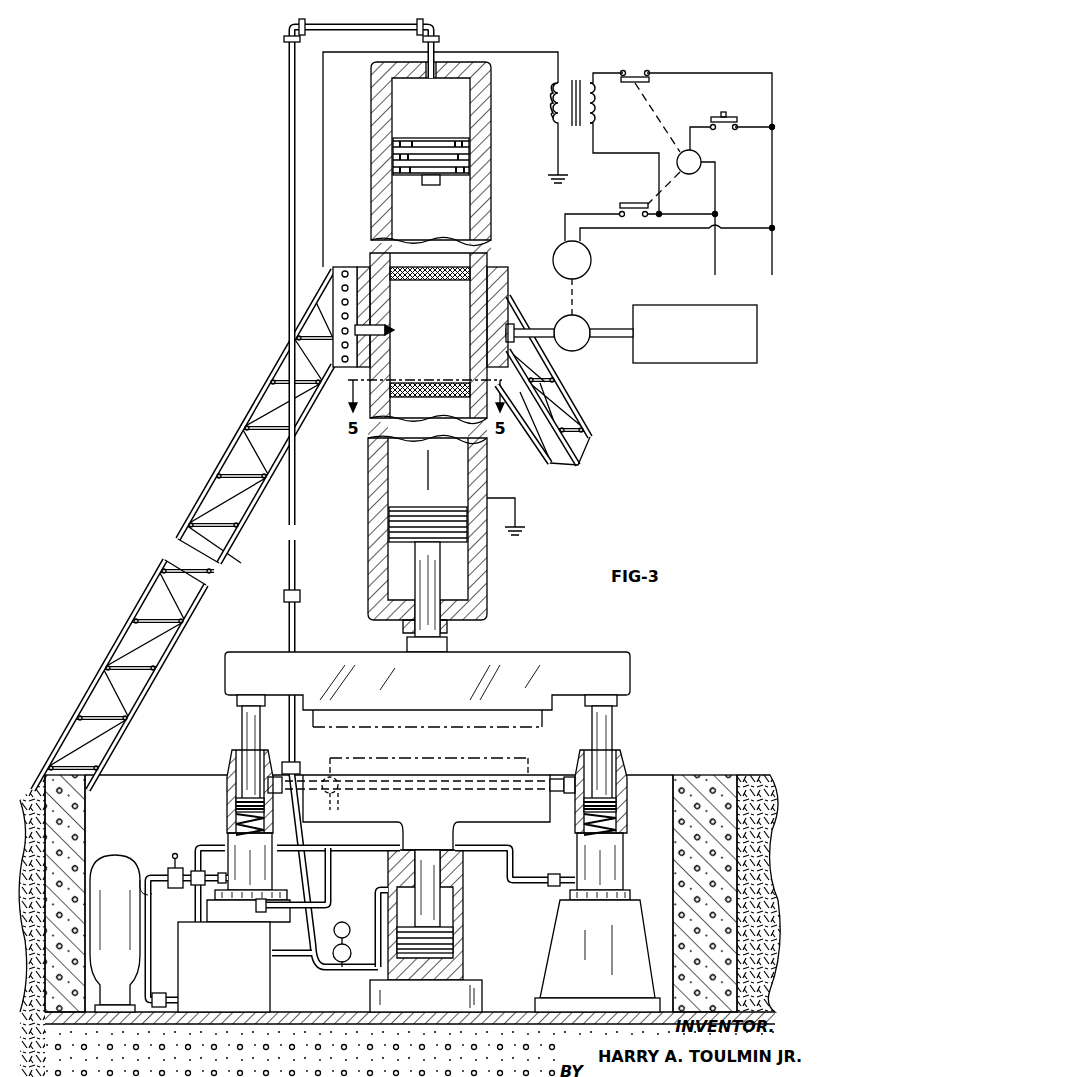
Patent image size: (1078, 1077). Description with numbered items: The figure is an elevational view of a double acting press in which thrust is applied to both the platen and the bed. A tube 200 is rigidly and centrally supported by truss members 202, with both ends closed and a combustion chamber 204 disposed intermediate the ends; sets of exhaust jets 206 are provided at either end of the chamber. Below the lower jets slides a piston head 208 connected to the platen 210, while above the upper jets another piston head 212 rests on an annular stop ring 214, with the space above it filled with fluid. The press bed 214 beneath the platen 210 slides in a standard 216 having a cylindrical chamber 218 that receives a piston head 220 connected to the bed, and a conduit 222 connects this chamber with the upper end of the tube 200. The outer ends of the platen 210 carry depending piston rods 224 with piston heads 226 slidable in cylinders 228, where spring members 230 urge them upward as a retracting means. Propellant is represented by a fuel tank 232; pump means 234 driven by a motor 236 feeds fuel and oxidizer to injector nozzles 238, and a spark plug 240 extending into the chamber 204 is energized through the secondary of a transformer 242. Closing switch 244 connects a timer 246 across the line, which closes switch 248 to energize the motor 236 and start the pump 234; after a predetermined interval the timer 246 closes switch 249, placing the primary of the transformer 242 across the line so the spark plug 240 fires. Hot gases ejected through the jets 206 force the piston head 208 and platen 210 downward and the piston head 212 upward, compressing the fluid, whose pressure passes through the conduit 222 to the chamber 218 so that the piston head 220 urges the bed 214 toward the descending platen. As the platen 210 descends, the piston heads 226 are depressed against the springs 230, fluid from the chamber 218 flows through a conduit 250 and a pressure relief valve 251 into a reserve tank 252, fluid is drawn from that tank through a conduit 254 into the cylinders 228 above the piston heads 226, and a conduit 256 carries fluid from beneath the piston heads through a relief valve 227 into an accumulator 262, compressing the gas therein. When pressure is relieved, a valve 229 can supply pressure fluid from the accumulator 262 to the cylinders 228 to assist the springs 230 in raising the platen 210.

The tube 200 is at (377, 478).
The truss members 202 is at (222, 453).
The combustion chamber 204 is at (414, 313).
The exhaust jets 206 is at (440, 270).
The piston head 208 is at (394, 532).
The platen 210 is at (414, 694).
The piston head 212 is at (408, 142).
The press bed 214 is at (465, 183).
The standard 216 is at (464, 966).
The cylindrical chamber 218 is at (466, 914).
The piston head 220 is at (453, 945).
The conduit 222 is at (288, 193).
The piston rods 224 is at (245, 719).
The piston heads 226 is at (235, 804).
The relief valve 227 is at (204, 955).
The cylinders 228 is at (230, 765).
The valve 229 is at (170, 875).
The spring members 230 is at (236, 826).
The fuel tank 232 is at (704, 363).
The pump means 234 is at (585, 321).
The motor 236 is at (590, 258).
The injector nozzles 238 is at (502, 321).
The spark plug 240 is at (392, 330).
The transformer 242 is at (553, 99).
The switch 244 is at (740, 117).
The timer 246 is at (688, 175).
The switch 248 is at (630, 203).
The switch 249 is at (637, 73).
The conduit 250 is at (380, 885).
The pressure relief valve 251 is at (342, 963).
The reserve tank 252 is at (224, 984).
The conduit 254 is at (265, 916).
The conduit 256 is at (197, 905).
The accumulator 262 is at (112, 866).